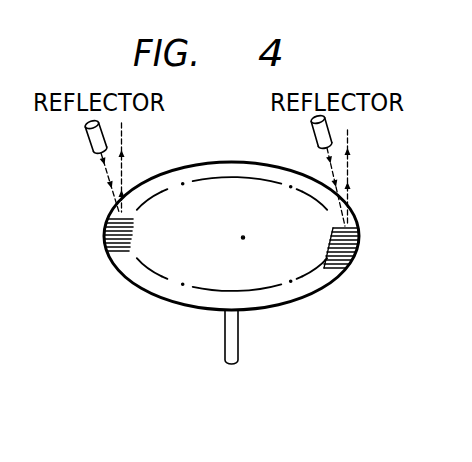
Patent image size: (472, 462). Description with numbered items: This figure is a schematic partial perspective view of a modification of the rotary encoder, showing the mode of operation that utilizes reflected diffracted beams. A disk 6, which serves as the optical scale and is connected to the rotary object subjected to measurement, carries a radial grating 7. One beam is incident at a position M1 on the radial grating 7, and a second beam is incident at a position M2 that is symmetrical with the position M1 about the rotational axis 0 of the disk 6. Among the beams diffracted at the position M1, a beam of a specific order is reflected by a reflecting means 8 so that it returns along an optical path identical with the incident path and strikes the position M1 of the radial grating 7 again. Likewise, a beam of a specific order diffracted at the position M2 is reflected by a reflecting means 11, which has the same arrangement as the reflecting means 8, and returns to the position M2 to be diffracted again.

The disk 6 is at (309, 258).
The radial grating 7 is at (344, 270).
The reflecting means 8 is at (315, 132).
The reflecting means 11 is at (91, 151).
The rotational axis 0 is at (243, 238).
The position M1 is at (356, 231).
The position M2 is at (112, 234).